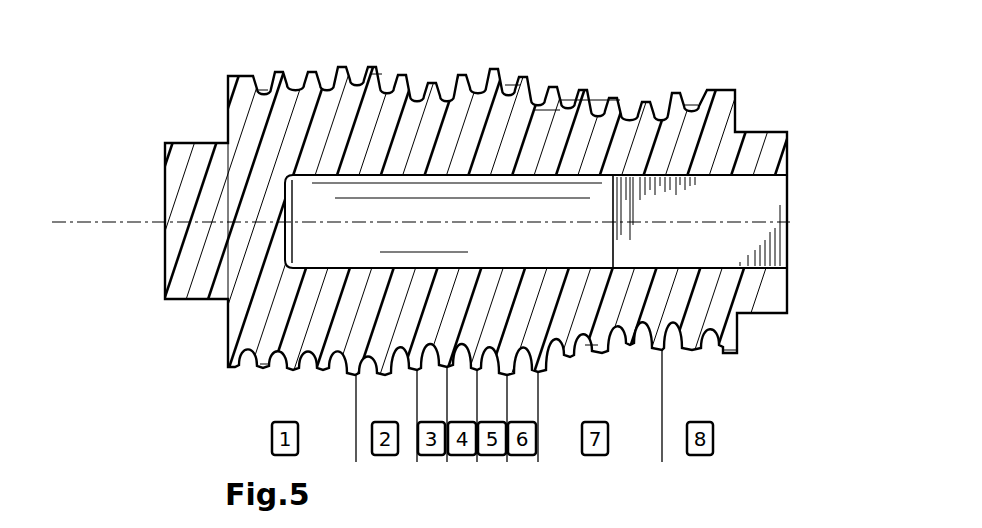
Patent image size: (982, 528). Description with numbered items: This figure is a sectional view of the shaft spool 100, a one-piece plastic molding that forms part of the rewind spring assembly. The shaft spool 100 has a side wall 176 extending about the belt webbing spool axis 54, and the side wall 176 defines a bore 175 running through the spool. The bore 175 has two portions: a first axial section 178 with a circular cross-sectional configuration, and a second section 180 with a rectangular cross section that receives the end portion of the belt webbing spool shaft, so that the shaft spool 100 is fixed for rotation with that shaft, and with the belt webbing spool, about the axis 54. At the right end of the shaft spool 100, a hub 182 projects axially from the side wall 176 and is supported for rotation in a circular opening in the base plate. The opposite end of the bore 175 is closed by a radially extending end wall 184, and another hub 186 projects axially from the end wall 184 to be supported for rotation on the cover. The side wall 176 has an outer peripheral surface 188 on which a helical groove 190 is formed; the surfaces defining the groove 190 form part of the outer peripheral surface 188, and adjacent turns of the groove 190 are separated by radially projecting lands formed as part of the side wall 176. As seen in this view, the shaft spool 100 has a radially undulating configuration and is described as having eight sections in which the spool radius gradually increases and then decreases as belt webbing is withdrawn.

The belt webbing spool axis 54 is at (120, 222).
The shaft spool 100 is at (165, 375).
The bore 175 is at (580, 162).
The side wall 176 is at (543, 143).
The first axial section 178 is at (408, 207).
The second section 180 is at (738, 242).
The hub 182 is at (785, 316).
The end wall 184 is at (273, 248).
The hub 186 is at (193, 143).
The outer peripheral surface 188 is at (377, 75).
The helical groove 190 is at (263, 88).